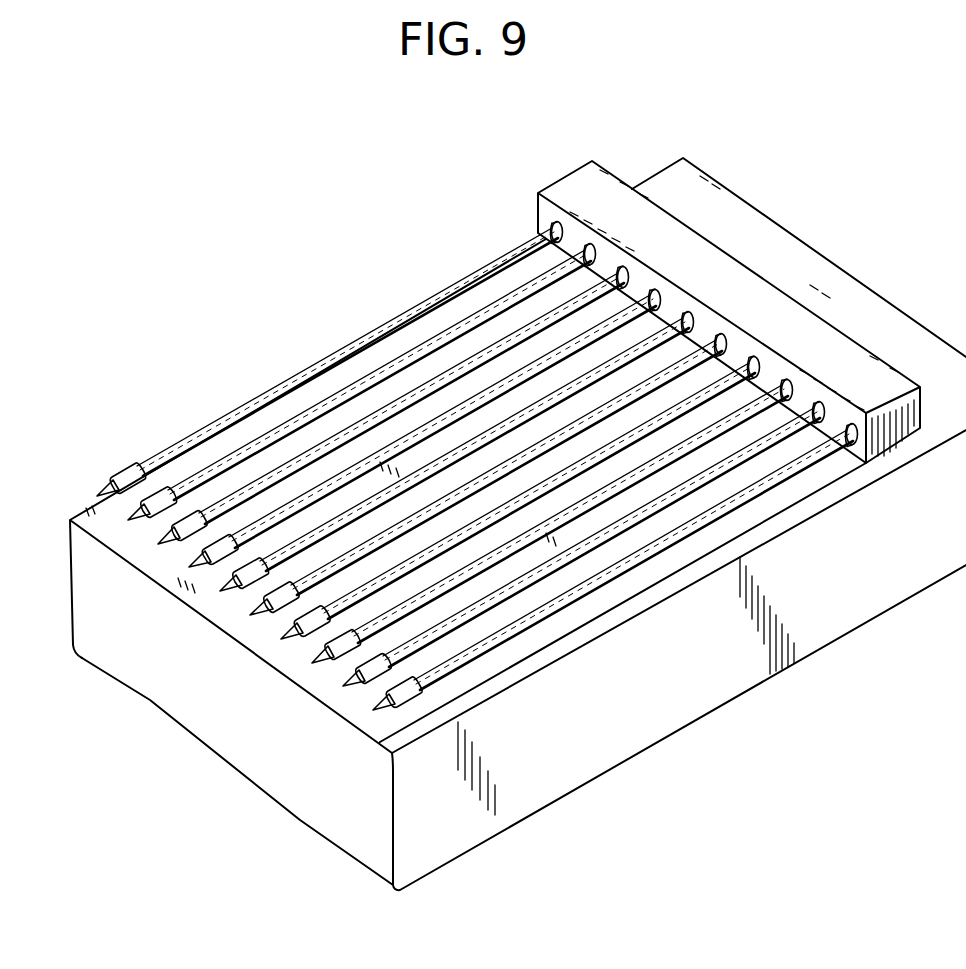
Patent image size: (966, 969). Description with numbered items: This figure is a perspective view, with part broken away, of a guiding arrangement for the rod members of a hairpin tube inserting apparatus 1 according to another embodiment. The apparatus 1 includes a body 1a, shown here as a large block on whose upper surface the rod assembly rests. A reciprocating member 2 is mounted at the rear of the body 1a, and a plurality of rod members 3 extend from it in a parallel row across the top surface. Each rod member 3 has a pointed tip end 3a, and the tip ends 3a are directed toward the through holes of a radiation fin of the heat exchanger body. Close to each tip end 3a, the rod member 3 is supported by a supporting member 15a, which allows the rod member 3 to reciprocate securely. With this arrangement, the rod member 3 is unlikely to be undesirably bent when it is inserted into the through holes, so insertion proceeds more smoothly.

The hairpin tube inserting apparatus 1 is at (847, 641).
The body 1a is at (607, 731).
The reciprocating member 2 is at (900, 430).
The rod member 3 is at (413, 361).
The pointed tip end 3a is at (352, 682).
The supporting member 15a is at (400, 714).